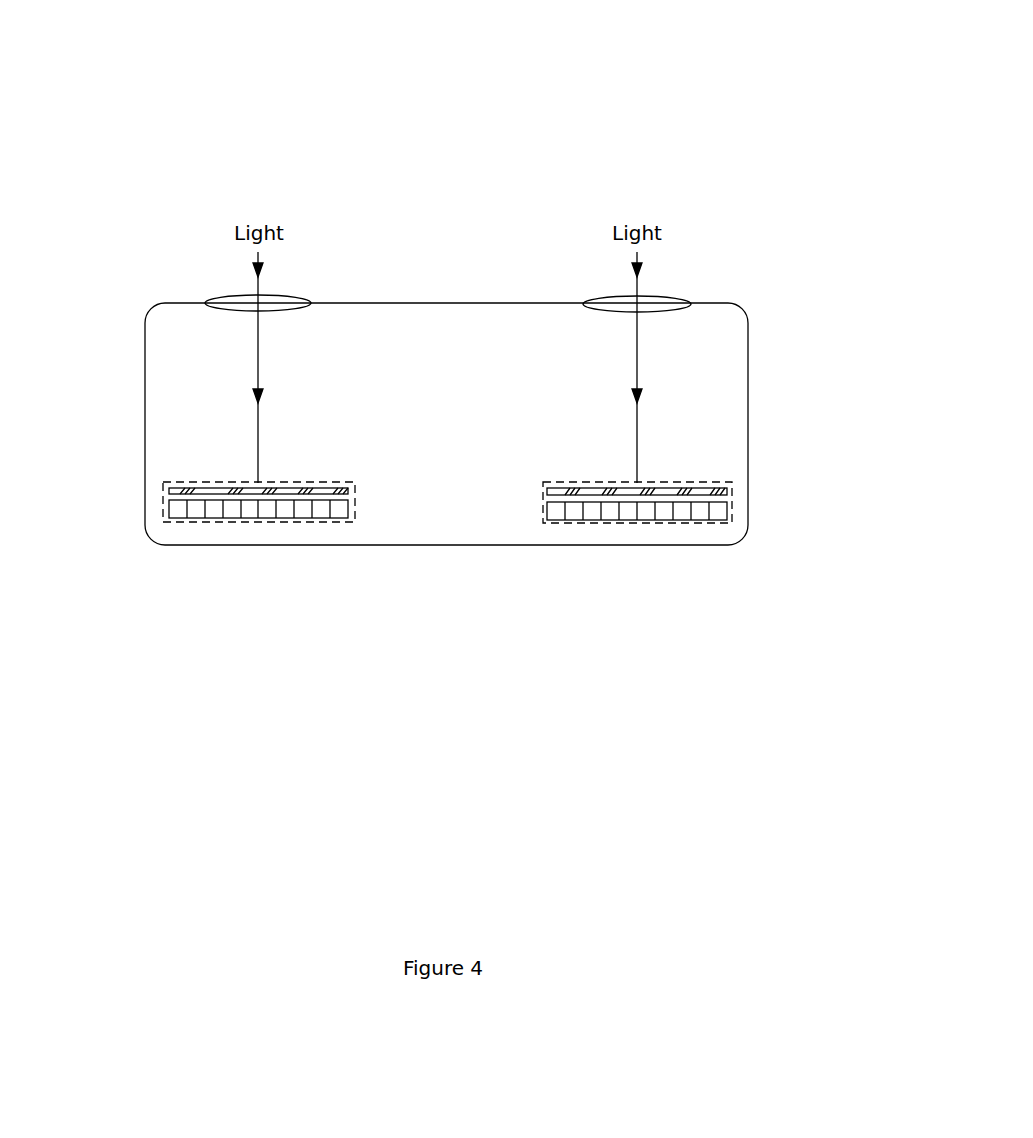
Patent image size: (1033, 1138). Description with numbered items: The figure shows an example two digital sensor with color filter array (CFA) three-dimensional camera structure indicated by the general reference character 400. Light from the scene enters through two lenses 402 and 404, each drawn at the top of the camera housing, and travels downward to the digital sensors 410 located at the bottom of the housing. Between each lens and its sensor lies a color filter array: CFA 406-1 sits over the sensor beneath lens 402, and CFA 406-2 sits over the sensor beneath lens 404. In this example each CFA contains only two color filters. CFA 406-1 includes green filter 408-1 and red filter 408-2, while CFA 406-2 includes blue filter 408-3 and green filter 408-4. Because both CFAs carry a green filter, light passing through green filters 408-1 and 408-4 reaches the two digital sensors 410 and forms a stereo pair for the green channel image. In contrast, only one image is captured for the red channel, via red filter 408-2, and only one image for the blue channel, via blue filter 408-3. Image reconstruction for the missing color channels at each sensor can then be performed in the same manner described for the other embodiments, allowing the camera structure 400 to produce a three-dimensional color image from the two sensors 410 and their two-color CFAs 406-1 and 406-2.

The two digital sensor with color filter array 3-D camera structure 400 is at (155, 45).
The lens 402 is at (302, 299).
The lens 404 is at (583, 300).
The color filter array (CFA) 406-1 is at (238, 541).
The color filter array (CFA) 406-2 is at (643, 547).
The green filter 408-1 is at (229, 494).
The red filter 408-2 is at (182, 490).
The blue filter 408-3 is at (700, 495).
The green filter 408-4 is at (683, 495).
The digital sensors 410 is at (542, 513).